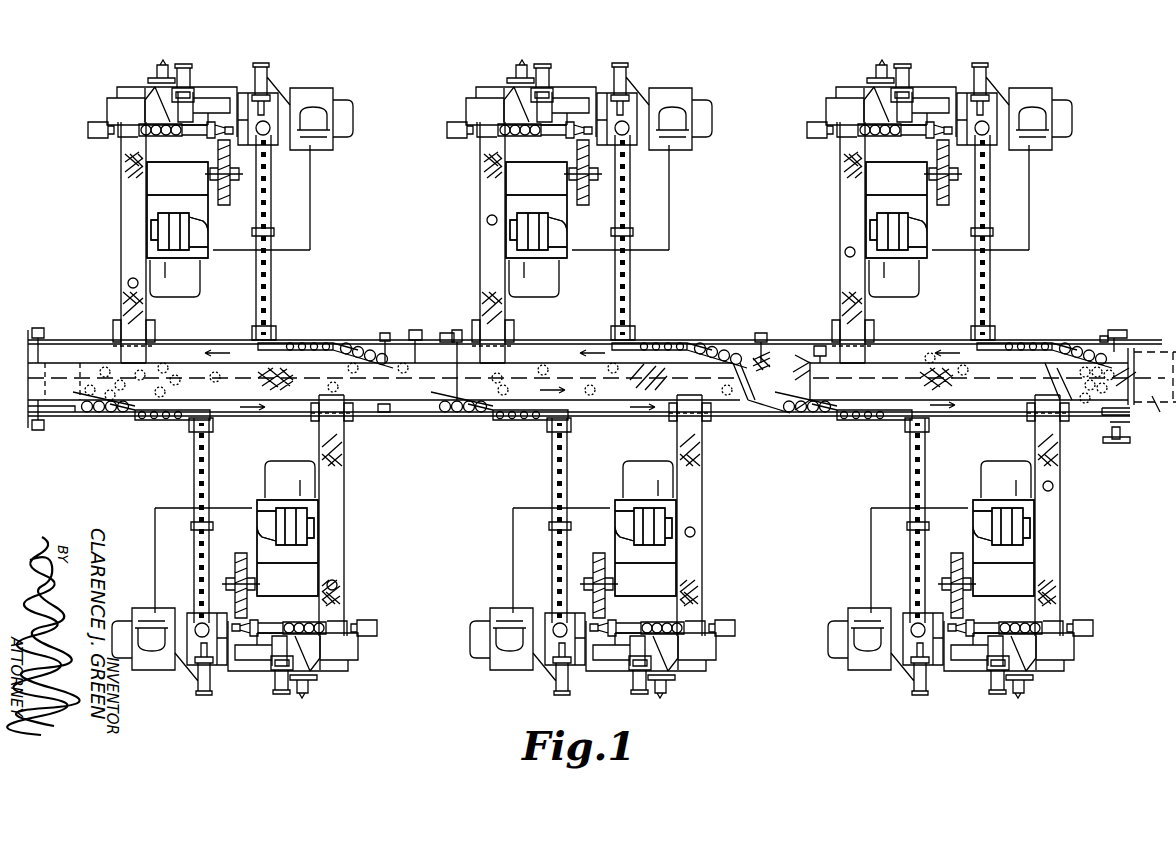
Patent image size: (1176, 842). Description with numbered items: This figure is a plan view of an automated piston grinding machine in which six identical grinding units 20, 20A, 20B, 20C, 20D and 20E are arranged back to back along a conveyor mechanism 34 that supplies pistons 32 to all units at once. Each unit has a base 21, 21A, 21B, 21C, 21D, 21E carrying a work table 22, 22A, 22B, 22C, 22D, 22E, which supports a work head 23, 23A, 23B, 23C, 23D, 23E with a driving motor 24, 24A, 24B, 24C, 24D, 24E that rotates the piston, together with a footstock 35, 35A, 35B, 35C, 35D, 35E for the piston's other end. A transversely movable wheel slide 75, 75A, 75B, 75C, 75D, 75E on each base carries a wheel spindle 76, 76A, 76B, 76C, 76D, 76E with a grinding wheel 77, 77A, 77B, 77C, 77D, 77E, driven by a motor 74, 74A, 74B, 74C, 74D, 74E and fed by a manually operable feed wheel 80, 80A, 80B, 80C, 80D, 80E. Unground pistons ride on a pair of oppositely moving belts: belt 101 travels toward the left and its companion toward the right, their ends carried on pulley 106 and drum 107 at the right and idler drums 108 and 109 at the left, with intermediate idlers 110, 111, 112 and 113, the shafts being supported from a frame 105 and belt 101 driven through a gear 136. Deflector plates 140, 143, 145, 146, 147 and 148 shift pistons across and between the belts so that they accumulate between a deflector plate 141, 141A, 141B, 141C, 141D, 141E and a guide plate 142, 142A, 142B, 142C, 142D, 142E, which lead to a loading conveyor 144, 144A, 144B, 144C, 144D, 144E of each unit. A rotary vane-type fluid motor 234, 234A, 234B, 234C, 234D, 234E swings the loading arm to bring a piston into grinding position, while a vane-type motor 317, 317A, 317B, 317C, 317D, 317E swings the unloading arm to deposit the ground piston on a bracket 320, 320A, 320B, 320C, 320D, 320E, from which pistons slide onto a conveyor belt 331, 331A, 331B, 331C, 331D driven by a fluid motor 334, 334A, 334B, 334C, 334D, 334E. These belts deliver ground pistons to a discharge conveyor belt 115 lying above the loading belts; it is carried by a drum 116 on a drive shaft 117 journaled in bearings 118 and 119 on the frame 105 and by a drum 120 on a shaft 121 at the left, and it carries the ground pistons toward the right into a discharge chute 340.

The piston grinding unit 20 is at (903, 490).
The base 21 is at (880, 528).
The work table 22 is at (1026, 654).
The work head 23 is at (893, 615).
The driving motor 24 is at (855, 630).
The footstock 35 is at (995, 608).
The motor 74 is at (987, 532).
The wheel slide 75 is at (995, 462).
The wheel spindle 76 is at (1001, 548).
The grinding wheel 77 is at (957, 568).
The feed wheel 80 is at (1022, 705).
The loading conveyor 144 is at (895, 520).
The rotary vane-type fluid motor 234 is at (905, 672).
The vane-type fluid motor 317 is at (986, 689).
The bracket 320 is at (1056, 675).
The conveyor belt 331 is at (1060, 516).
The fluid motor 334 is at (1091, 611).
The deflector plate 141 is at (840, 420).
The guide plate 142 is at (797, 410).
The piston grinding unit 20A is at (541, 490).
The base 21A is at (494, 558).
The work table 22A is at (675, 654).
The work head 23A is at (530, 609).
The driving motor 24A is at (503, 627).
The footstock 35A is at (637, 608).
The motor 74A is at (645, 500).
The wheel slide 75A is at (643, 462).
The wheel spindle 76A is at (643, 548).
The grinding wheel 77A is at (595, 566).
The feed wheel 80A is at (671, 705).
The loading conveyor 144A is at (536, 520).
The rotary vane-type fluid motor 234A is at (549, 672).
The vane-type fluid motor 317A is at (631, 689).
The bracket 320A is at (705, 675).
The discharge conveyor 331A is at (700, 514).
The fluid motor 334A is at (740, 615).
The deflector plate 141A is at (500, 410).
The guide plate 142A is at (455, 408).
The piston grinding unit 20B is at (160, 497).
The base 21B is at (165, 530).
The work table 22B is at (343, 655).
The work head 23B is at (180, 612).
The driving motor 24B is at (150, 625).
The footstock 35B is at (272, 618).
The motor 74B is at (278, 510).
The wheel slide 75B is at (290, 500).
The wheel spindle 76B is at (252, 580).
The grinding wheel 77B is at (240, 555).
The feed wheel 80B is at (310, 697).
The loading conveyor 144B is at (188, 471).
The rotary vane-type fluid motor 234B is at (199, 697).
The vane-type fluid motor 317B is at (275, 699).
The bracket 320B is at (310, 645).
The discharge conveyor 331B is at (330, 515).
The fluid motor 334B is at (362, 628).
The deflector plate 141B is at (140, 410).
The guide plate 142B is at (85, 404).
The piston grinding unit 20C is at (1003, 261).
The base 21C is at (1048, 197).
The work table 22C is at (862, 105).
The work head 23C is at (1018, 144).
The driving motor 24C is at (1053, 127).
The footstock 35C is at (905, 155).
The motor 74C is at (918, 223).
The wheel slide 75C is at (894, 278).
The wheel spindle 76C is at (899, 210).
The grinding wheel 77C is at (950, 187).
The feed wheel 80C is at (868, 58).
The loading conveyor 144C is at (1011, 237).
The rotary vane-type fluid motor 234C is at (995, 87).
The vane-type fluid motor 317C is at (917, 66).
The bracket 320C is at (833, 80).
The discharge conveyor 331C is at (842, 190).
The fluid motor 334C is at (797, 140).
The deflector plate 141C is at (1055, 352).
The guide plate 142C is at (1083, 352).
The piston grinding unit 20D is at (650, 261).
The base 21D is at (689, 197).
The work table 22D is at (502, 105).
The work head 23D is at (659, 144).
The driving motor 24D is at (694, 127).
The footstock 35D is at (545, 155).
The motor 74D is at (559, 223).
The wheel slide 75D is at (534, 278).
The wheel spindle 76D is at (539, 210).
The grinding wheel 77D is at (591, 187).
The feed wheel 80D is at (508, 58).
The loading conveyor 144D is at (652, 237).
The rotary vane-type fluid motor 234D is at (636, 87).
The vane-type fluid motor 317D is at (558, 66).
The bracket 320D is at (473, 80).
The discharge conveyor 331D is at (479, 195).
The fluid motor 334D is at (437, 140).
The deflector plate 141D is at (705, 355).
The guide plate 142D is at (733, 352).
The piston grinding unit 20E is at (317, 254).
The base 21E is at (297, 212).
The work table 22E is at (108, 110).
The work head 23E is at (285, 130).
The driving motor 24E is at (318, 125).
The footstock 35E is at (193, 146).
The motor 74E is at (185, 250).
The wheel slide 75E is at (185, 258).
The wheel spindle 76E is at (213, 178).
The grinding wheel 77E is at (230, 187).
The feed wheel 80E is at (156, 66).
The loading conveyor 144E is at (280, 283).
The rotary vane-type fluid motor 234E is at (269, 66).
The vane-type fluid motor 317E is at (194, 64).
The bracket 320E is at (155, 100).
The fluid motor 334E is at (95, 126).
The deflector plate 141E is at (340, 357).
The guide plate 142E is at (378, 350).
The pistons 32 is at (762, 356).
The conveyor mechanism 34 is at (447, 328).
The conveyor belt 101 is at (410, 340).
The frame 105 is at (919, 338).
The pulley 106 is at (1105, 420).
The pulley or drum 107 is at (1142, 358).
The idler pulley or drum 108 is at (62, 413).
The idler pulley or drum 109 is at (63, 347).
The idler pulley or drum 110 is at (412, 420).
The idler pulley or drum 111 is at (767, 420).
The idler pulley or drum 112 is at (386, 332).
The idler pulley or drum 113 is at (762, 333).
The conveyor belt 115 is at (535, 365).
The drum 116 is at (1120, 352).
The drive shaft 117 is at (1115, 330).
The bearing 118 is at (1116, 440).
The bearing 119 is at (1106, 336).
The drum 120 is at (36, 336).
The shaft 121 is at (36, 430).
The gear 136 is at (1130, 442).
The deflector plate 140 is at (735, 398).
The deflector plate 143 is at (1033, 406).
The deflector plate 145 is at (820, 346).
The deflector plate 146 is at (456, 355).
The deflector plate 147 is at (118, 350).
The deflector plate 148 is at (383, 410).
The discharge chute 340 is at (1157, 406).